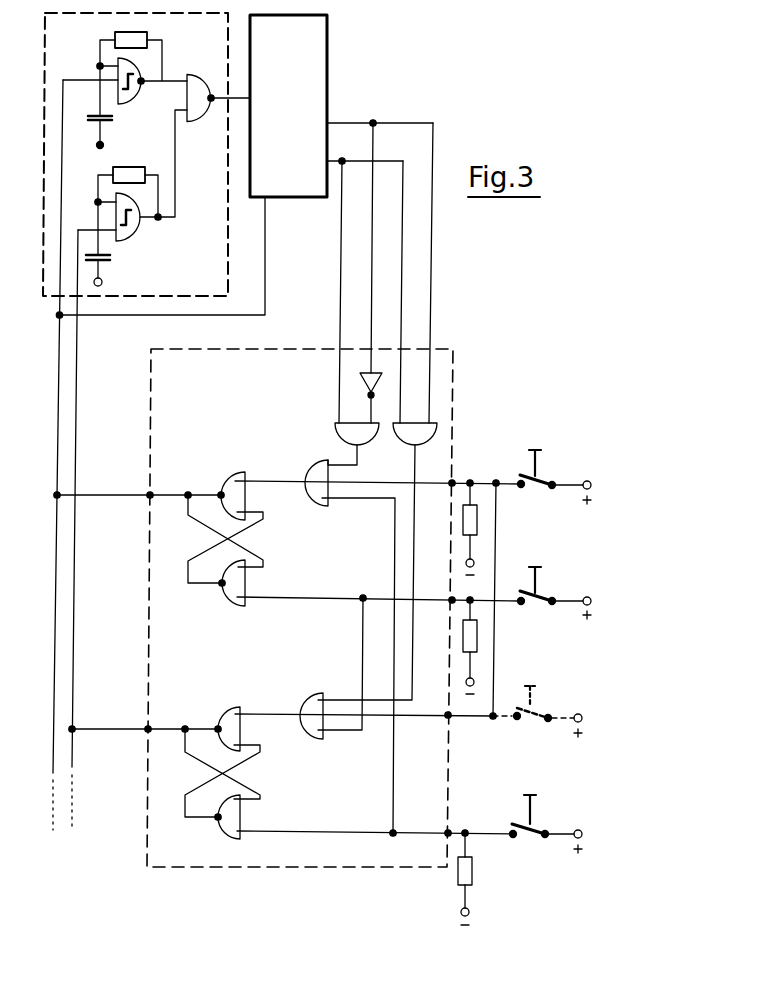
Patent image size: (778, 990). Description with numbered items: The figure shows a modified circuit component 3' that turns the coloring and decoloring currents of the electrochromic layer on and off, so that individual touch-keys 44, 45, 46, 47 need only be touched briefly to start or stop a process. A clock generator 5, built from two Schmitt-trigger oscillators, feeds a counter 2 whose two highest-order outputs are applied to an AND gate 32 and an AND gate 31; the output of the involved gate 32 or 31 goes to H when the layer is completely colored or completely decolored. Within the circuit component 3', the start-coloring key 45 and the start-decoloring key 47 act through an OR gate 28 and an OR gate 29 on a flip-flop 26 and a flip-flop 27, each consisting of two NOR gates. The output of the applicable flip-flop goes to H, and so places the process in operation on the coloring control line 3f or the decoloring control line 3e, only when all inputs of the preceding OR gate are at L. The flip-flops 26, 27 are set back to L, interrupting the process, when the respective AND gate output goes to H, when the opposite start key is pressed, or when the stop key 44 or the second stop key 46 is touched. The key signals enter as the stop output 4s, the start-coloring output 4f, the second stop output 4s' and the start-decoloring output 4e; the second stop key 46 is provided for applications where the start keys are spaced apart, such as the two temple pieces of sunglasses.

The clock generator 5 is at (44, 48).
The counter 2 is at (310, 48).
The circuit component 3' is at (307, 587).
The flip-flop 26 is at (206, 475).
The flip-flop 27 is at (209, 705).
The OR gate 28 is at (306, 473).
The OR gate 29 is at (306, 706).
The AND gate 31 is at (413, 432).
The AND gate 32 is at (338, 421).
The coloring control line 3f is at (149, 494).
The decoloring control line 3e is at (147, 728).
The stop output 4s is at (380, 578).
The start-coloring output 4f is at (450, 598).
The second stop output 4s' is at (373, 697).
The start-decoloring output 4e is at (447, 833).
The stop key 44 is at (528, 462).
The start-coloring key 45 is at (530, 578).
The second stop key 46 is at (530, 688).
The start-decoloring key 47 is at (525, 803).